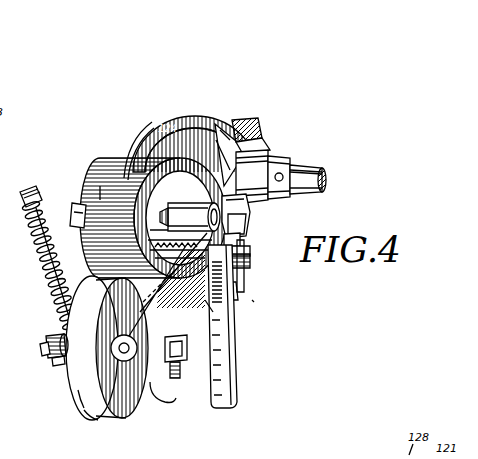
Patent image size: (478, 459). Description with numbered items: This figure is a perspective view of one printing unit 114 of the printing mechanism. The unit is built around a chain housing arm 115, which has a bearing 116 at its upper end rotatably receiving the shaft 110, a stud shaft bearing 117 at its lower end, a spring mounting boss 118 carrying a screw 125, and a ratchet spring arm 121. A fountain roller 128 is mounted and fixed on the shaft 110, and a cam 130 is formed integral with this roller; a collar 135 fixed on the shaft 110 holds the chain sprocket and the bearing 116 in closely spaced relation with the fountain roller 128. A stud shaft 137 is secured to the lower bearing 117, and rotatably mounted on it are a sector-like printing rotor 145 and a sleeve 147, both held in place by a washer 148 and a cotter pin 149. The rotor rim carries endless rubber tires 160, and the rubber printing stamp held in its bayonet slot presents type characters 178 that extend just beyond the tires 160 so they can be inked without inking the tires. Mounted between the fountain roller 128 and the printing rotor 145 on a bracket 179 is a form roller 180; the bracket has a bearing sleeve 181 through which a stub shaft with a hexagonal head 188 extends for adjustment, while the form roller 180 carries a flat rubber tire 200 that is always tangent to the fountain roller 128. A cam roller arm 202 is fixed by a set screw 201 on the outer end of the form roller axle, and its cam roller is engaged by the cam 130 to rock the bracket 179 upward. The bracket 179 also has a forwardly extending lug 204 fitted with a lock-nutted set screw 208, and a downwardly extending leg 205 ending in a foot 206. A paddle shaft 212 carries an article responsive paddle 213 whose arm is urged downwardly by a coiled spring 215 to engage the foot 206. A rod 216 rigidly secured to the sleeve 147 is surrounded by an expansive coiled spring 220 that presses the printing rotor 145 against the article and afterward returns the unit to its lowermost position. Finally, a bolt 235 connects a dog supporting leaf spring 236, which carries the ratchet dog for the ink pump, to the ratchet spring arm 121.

The shaft 110 is at (306, 170).
The printing unit 114 is at (255, 300).
The chain housing arm 115 is at (165, 402).
The bearing 116 is at (256, 162).
The stud shaft bearing 117 is at (177, 378).
The spring mounting boss 118 is at (186, 348).
The ratchet spring arm 121 is at (220, 125).
The screw 125 is at (213, 312).
The fountain roller 128 is at (172, 113).
The cam 130 is at (136, 136).
The collar 135 is at (280, 166).
The stud shaft 137 is at (45, 357).
The printing rotor 145 is at (82, 416).
The sleeve 147 is at (58, 338).
The washer 148 is at (58, 366).
The cotter pin 149 is at (60, 344).
The endless rubber tires 160 is at (102, 287).
The type characters 178 is at (78, 395).
The bracket 179 is at (236, 232).
The form roller 180 is at (98, 193).
The bearing sleeve 181 is at (240, 196).
The hexagonal head 188 is at (247, 215).
The flat rubber tire 200 is at (108, 163).
The set screw 201 is at (48, 256).
The cam roller arm 202 is at (73, 214).
The lug 204 is at (159, 286).
The leg 205 is at (244, 248).
The foot 206 is at (238, 286).
The set screw 208 is at (170, 212).
The paddle shaft 212 is at (250, 260).
The article responsive paddle 213 is at (238, 383).
The coiled spring 215 is at (246, 270).
The rod 216 is at (38, 186).
The expansive coiled spring 220 is at (30, 262).
The bolt 235 is at (246, 126).
The dog supporting leaf spring 236 is at (256, 142).